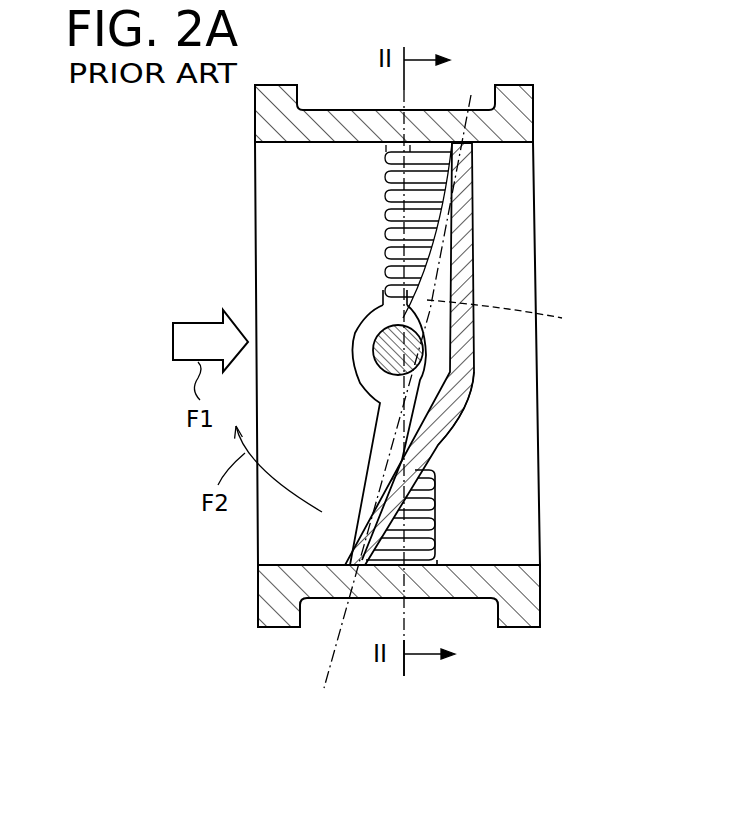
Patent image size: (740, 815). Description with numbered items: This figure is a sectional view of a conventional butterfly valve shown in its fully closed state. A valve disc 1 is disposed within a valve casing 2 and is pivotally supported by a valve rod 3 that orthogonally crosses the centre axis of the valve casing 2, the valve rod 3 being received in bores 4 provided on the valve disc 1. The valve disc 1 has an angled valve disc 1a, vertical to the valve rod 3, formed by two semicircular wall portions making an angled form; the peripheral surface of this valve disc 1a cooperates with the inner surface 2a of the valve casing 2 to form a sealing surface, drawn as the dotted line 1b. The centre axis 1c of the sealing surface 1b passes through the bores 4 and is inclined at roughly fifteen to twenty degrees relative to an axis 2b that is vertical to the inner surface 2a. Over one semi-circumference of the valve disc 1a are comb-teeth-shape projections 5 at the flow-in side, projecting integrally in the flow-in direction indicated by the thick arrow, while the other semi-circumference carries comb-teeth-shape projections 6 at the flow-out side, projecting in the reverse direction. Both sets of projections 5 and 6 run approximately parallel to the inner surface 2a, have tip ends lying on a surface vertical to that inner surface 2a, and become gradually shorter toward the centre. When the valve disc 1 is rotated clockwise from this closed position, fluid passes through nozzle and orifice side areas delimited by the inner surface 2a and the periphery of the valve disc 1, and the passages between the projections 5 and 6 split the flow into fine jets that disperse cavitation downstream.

The valve disc 1 is at (480, 252).
The valve disc (angled portion) 1a is at (455, 405).
The sealing surface 1b is at (509, 316).
The centre axis of the sealing surface 1c is at (334, 641).
The valve casing 2 is at (462, 600).
The inner surface of the valve casing 2a is at (510, 565).
The axis vertical to the inner surface 2b is at (404, 668).
The valve rod 3 is at (375, 368).
The bores 4 is at (357, 345).
The comb-teeth-shape projections at the flow-in side 5 is at (385, 214).
The comb-teeth-shape projections at the flow-out side 6 is at (435, 512).